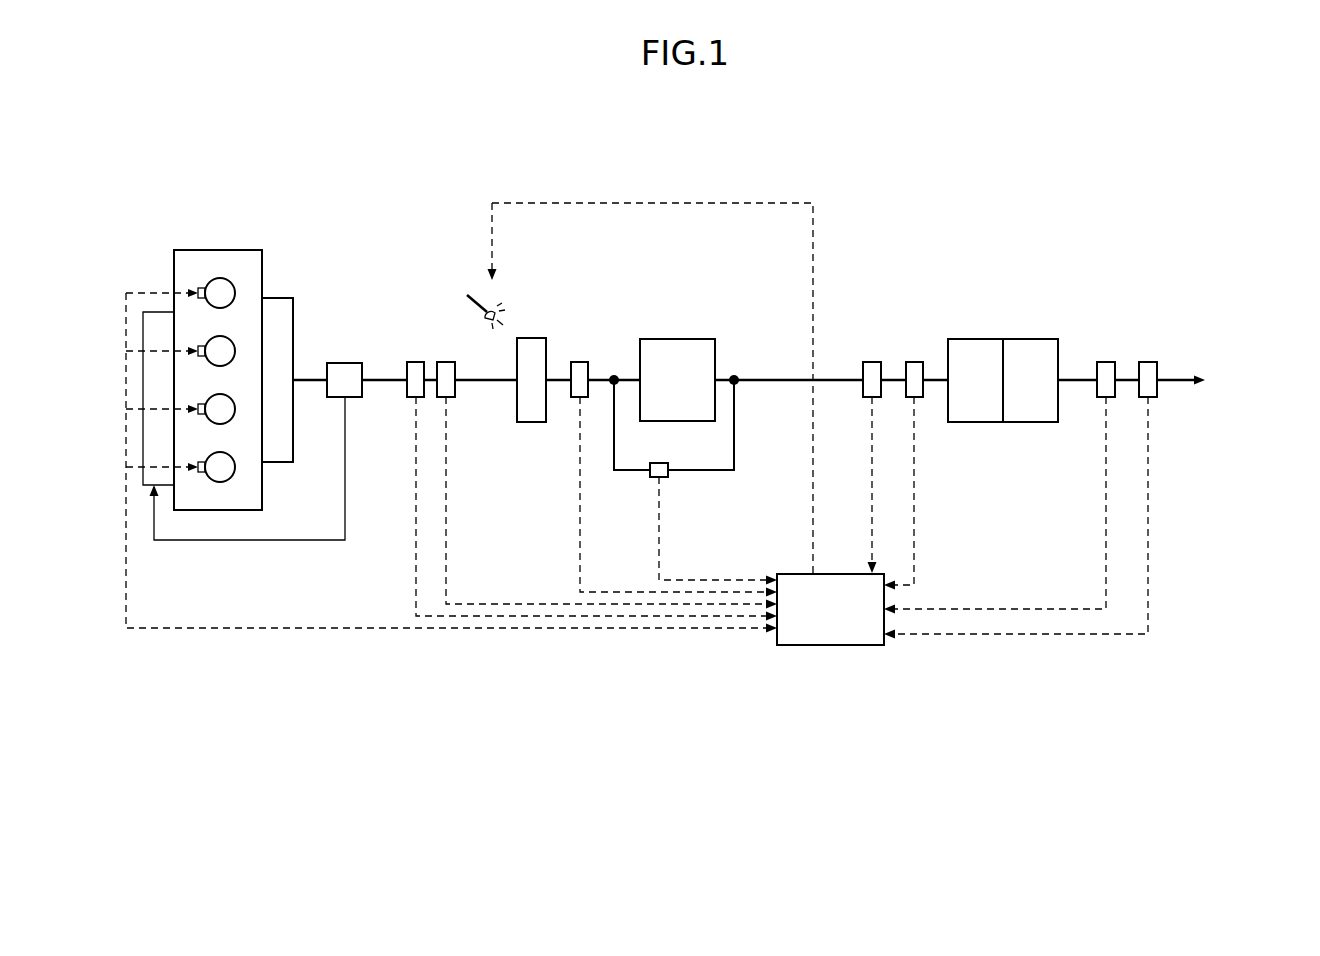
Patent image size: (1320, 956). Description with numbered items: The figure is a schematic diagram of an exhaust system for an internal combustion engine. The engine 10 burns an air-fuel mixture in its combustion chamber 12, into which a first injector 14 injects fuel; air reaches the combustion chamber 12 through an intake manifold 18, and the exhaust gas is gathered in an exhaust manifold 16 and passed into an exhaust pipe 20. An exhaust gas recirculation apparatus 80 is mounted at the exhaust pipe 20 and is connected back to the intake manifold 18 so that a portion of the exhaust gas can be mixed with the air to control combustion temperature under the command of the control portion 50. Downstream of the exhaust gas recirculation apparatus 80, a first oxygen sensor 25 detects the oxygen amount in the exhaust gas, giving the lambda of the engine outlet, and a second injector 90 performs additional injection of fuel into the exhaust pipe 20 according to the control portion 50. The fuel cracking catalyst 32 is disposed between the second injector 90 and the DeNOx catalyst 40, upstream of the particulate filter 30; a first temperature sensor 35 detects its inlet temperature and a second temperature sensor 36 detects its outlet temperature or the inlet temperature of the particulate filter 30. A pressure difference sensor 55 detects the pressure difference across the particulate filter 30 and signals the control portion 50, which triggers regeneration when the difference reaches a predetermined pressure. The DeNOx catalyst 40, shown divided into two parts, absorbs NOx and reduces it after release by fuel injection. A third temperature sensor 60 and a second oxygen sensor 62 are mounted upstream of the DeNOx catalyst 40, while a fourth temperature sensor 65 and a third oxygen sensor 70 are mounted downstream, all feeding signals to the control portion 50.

The engine 10 is at (275, 220).
The combustion chamber 12 is at (221, 278).
The first injector 14 is at (199, 287).
The exhaust manifold 16 is at (286, 305).
The intake manifold 18 is at (143, 312).
The exhaust pipe 20 is at (372, 378).
The first oxygen sensor 25 is at (415, 362).
The particulate filter 30 is at (698, 290).
The fuel cracking catalyst 32 is at (532, 338).
The first temperature sensor 35 is at (445, 362).
The second temperature sensor 36 is at (580, 362).
The DeNOx catalyst 40 is at (1021, 347).
The control portion 50 is at (847, 640).
The pressure difference sensor 55 is at (655, 473).
The third temperature sensor 60 is at (872, 362).
The second oxygen sensor 62 is at (914, 362).
The fourth temperature sensor 65 is at (1107, 364).
The third oxygen sensor 70 is at (1150, 364).
The exhaust gas recirculation apparatus 80 is at (342, 362).
The second injector 90 is at (467, 295).